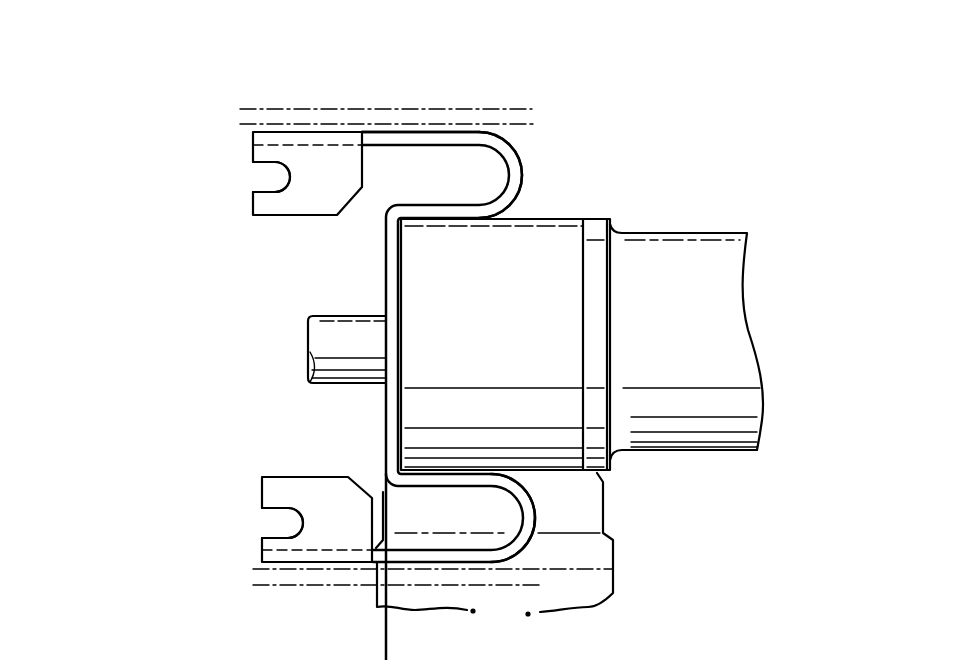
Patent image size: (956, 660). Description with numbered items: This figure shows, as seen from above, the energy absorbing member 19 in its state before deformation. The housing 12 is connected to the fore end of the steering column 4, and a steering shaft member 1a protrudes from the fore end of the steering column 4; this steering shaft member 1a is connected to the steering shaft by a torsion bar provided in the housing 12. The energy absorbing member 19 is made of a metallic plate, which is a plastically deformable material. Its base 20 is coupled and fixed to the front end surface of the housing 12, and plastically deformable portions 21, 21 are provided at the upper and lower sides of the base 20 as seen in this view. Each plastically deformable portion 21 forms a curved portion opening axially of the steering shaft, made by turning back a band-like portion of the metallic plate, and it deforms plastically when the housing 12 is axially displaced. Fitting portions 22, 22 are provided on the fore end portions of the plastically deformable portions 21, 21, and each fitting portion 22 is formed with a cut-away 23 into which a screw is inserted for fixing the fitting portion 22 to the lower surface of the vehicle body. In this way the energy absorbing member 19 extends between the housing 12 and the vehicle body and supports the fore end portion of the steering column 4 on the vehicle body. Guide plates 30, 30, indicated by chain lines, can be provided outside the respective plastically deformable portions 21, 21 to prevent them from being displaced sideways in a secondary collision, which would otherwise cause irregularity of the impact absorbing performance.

The steering shaft member 1a is at (320, 333).
The steering column 4 is at (672, 255).
The housing 12 is at (543, 238).
The energy absorbing member 19 is at (458, 139).
The base 20 is at (386, 425).
The plastically deformable portion 21 is at (505, 147).
The fitting portion 22 is at (315, 203).
The cut-away 23 is at (270, 164).
The guide plate 30 is at (367, 112).